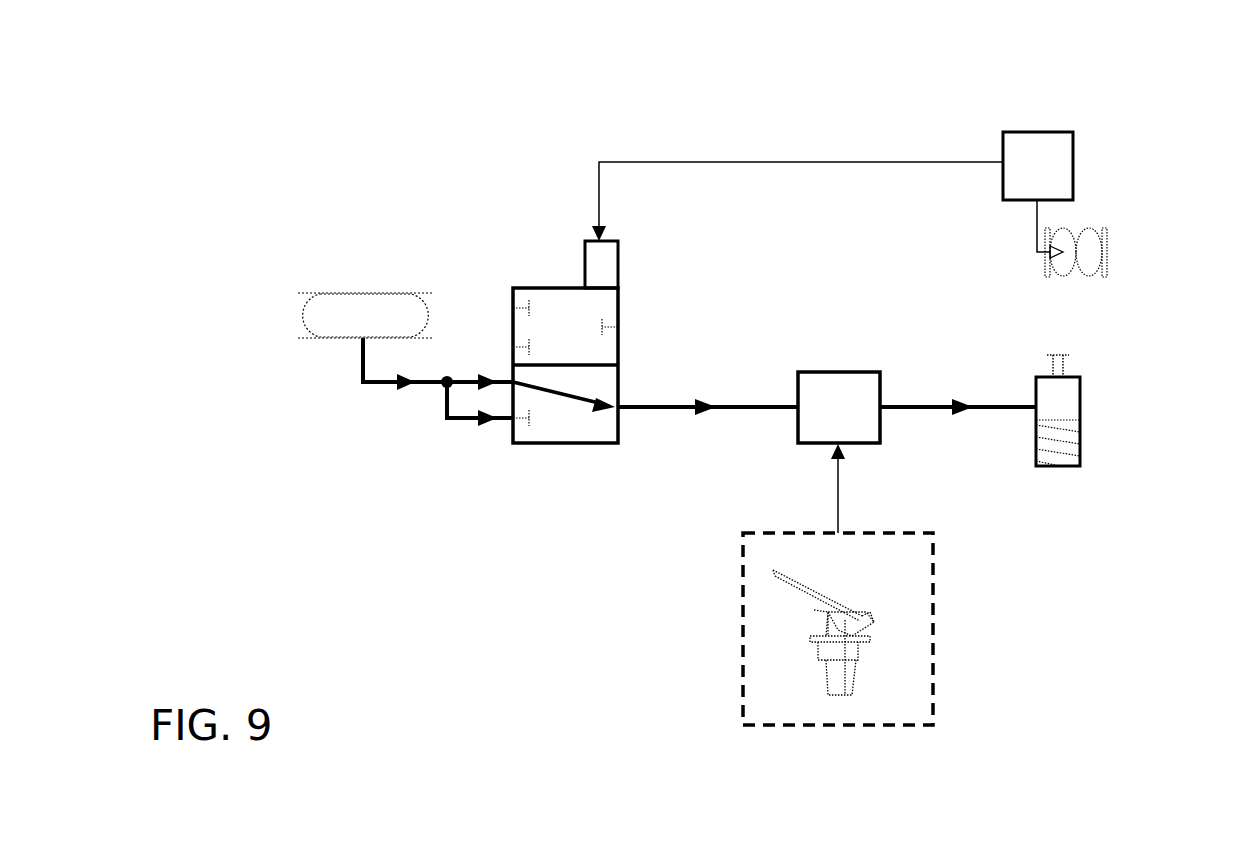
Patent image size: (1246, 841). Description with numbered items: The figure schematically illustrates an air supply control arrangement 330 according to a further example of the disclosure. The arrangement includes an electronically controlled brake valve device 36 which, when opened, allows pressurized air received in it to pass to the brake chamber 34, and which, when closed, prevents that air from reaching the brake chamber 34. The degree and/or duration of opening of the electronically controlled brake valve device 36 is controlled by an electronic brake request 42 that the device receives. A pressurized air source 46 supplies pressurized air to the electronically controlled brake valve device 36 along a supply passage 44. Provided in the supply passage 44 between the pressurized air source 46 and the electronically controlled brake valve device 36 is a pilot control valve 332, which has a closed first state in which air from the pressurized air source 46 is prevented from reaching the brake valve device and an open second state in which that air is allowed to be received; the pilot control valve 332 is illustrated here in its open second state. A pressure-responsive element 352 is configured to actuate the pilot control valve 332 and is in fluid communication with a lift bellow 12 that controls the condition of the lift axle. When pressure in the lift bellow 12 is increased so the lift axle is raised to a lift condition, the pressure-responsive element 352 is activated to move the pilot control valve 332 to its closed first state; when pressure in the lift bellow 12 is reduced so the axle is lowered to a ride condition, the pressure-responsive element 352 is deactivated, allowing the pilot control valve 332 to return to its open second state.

The air supply control arrangement 330 is at (266, 106).
The pressure-responsive element 352 is at (1017, 132).
The lift bellow 12 is at (1107, 246).
The pilot control valve 332 is at (542, 288).
The pressurized air source 46 is at (390, 292).
The supply passage 44 is at (426, 386).
The electronically controlled brake valve device 36 is at (839, 407).
The electronic brake request 42 is at (838, 508).
The brake chamber 34 is at (1082, 407).